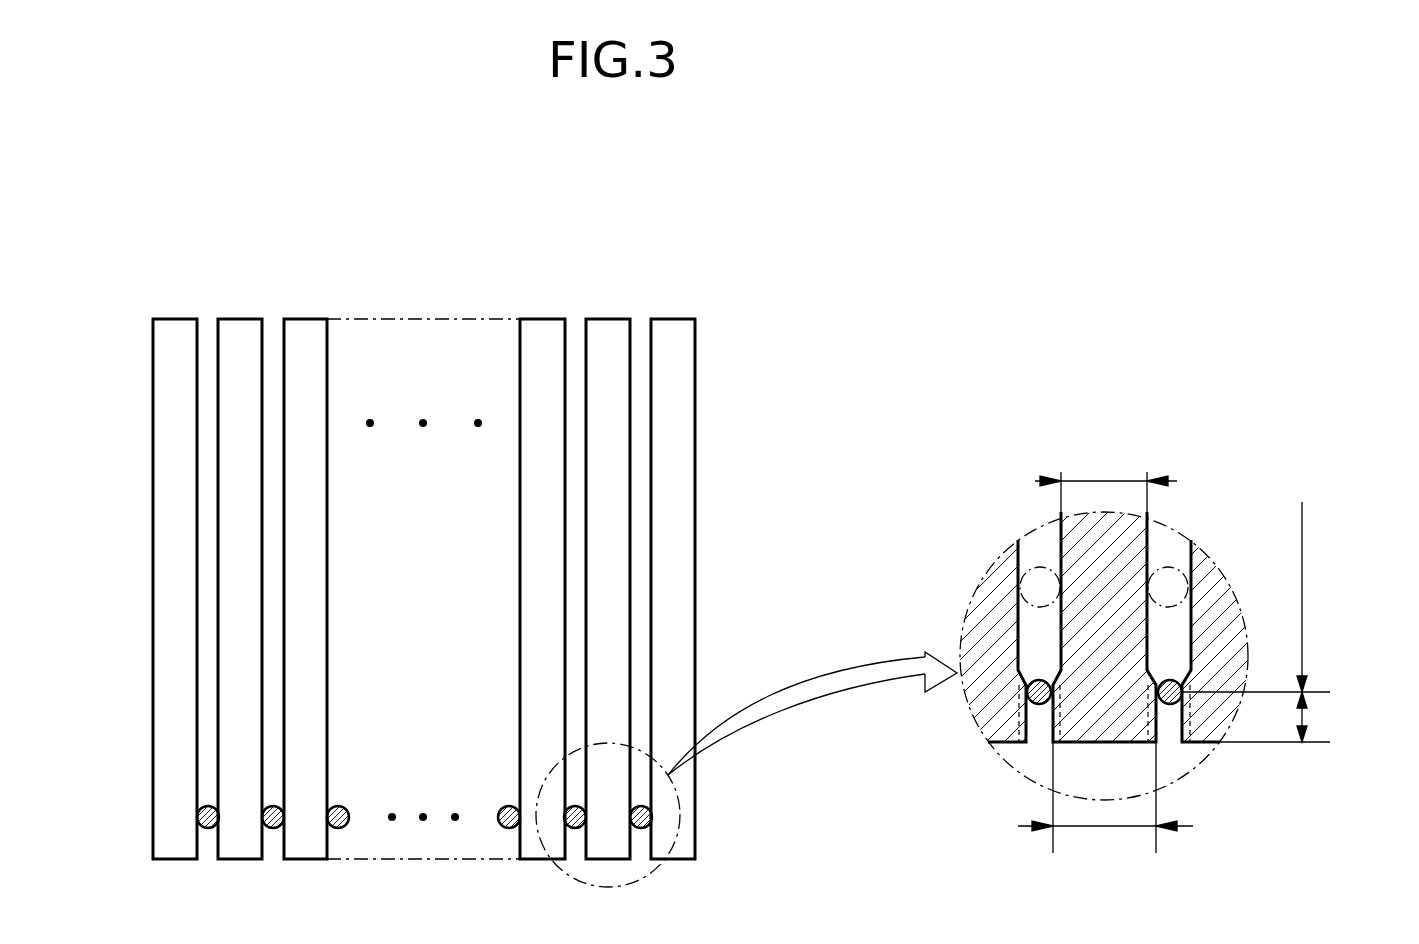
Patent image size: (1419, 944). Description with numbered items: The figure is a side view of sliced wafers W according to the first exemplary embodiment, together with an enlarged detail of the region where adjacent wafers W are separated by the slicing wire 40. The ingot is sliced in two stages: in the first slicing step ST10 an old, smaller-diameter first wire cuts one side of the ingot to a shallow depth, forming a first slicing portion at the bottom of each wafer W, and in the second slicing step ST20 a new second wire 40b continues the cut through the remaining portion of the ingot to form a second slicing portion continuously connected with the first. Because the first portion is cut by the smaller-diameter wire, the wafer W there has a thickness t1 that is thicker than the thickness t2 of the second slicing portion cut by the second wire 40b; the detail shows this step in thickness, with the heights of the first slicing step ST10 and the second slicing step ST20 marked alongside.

The wafer W is at (656, 319).
The wire 40 is at (1027, 656).
The second wire 40b is at (1029, 565).
The thickness of the first slicing portion t1 is at (1105, 802).
The thickness of the second slicing portion t2 is at (1102, 482).
The first slicing step ST10 is at (1296, 717).
The second slicing step ST20 is at (1278, 597).